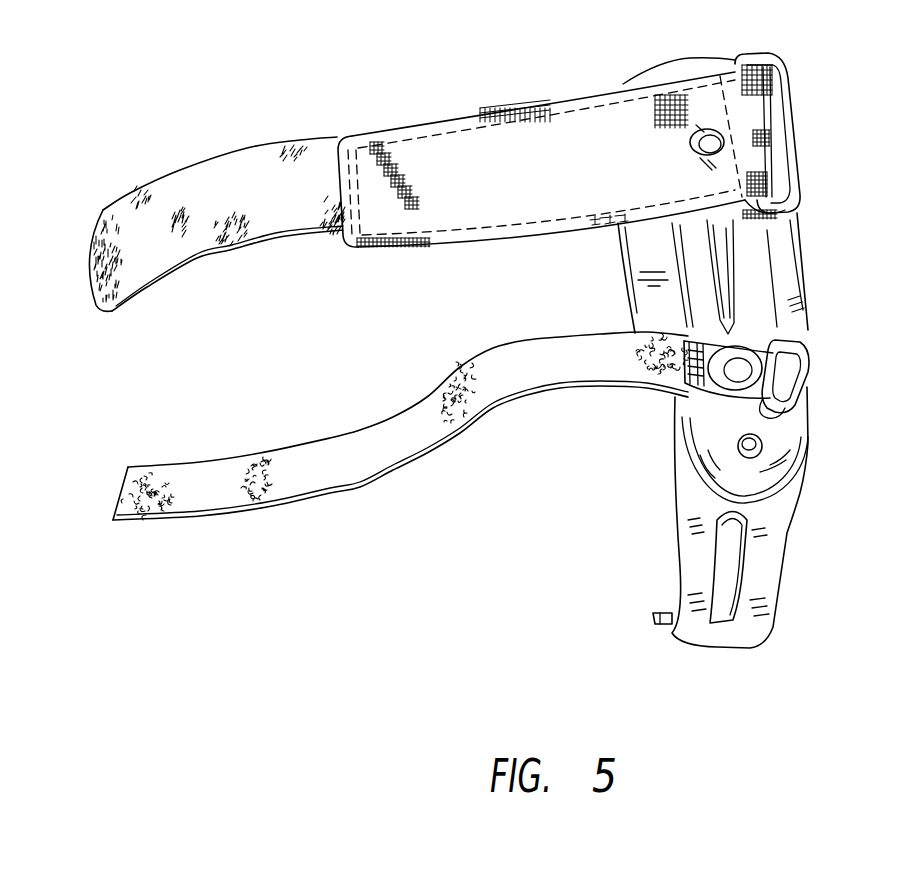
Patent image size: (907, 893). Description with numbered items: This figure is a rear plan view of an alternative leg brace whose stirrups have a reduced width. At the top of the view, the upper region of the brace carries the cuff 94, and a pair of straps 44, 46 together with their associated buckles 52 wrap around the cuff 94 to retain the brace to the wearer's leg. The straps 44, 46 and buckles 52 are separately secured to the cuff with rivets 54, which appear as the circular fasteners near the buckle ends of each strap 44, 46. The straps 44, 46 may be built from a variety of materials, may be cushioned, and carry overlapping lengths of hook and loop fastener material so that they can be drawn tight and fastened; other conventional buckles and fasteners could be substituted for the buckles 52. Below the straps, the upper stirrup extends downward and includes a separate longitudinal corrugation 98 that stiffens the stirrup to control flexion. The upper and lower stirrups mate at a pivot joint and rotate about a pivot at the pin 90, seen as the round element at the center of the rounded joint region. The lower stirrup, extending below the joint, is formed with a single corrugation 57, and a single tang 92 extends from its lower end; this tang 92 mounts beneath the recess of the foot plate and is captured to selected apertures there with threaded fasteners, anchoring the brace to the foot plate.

The strap 44 is at (373, 132).
The strap 46 is at (390, 420).
The buckle 52 is at (786, 88).
The rivet 54 is at (700, 137).
The corrugation 57 is at (737, 555).
The pin 90 is at (762, 443).
The tang 92 is at (653, 617).
The cuff 94 is at (632, 268).
The longitudinal corrugation 98 is at (723, 262).